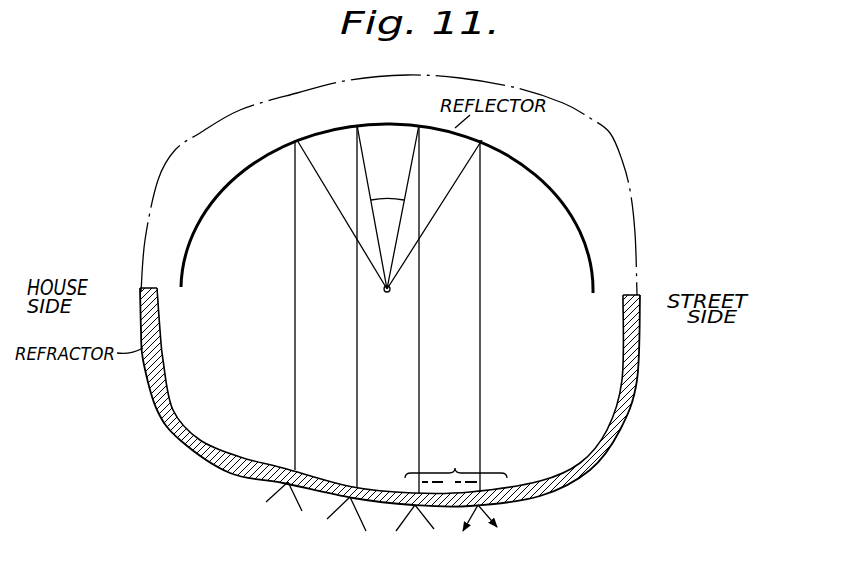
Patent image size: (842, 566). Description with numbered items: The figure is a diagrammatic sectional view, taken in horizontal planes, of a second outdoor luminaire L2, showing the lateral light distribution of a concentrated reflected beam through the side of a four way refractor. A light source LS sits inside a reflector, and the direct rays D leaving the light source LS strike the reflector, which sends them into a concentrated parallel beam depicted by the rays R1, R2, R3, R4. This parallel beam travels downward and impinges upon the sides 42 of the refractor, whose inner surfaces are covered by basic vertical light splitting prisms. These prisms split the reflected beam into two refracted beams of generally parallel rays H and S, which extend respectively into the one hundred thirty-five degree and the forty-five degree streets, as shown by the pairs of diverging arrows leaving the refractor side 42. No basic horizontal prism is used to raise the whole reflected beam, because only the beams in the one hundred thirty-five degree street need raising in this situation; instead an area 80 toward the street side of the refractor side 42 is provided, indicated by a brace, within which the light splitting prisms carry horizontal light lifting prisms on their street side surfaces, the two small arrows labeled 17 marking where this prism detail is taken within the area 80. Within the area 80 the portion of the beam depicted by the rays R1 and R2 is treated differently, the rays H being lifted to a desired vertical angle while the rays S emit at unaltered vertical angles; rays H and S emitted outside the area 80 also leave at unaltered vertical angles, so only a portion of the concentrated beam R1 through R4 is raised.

The luminaire L2 is at (146, 396).
The refractor side 42 is at (558, 488).
The prisms 17 is at (430, 479).
The area 80 is at (493, 470).
The ray R1 is at (478, 331).
The ray R2 is at (417, 333).
The ray R3 is at (355, 331).
The ray R4 is at (293, 331).
The light source LS is at (385, 292).
The direct rays D is at (343, 214).
The refracted rays H is at (270, 493).
The refracted rays S is at (298, 511).